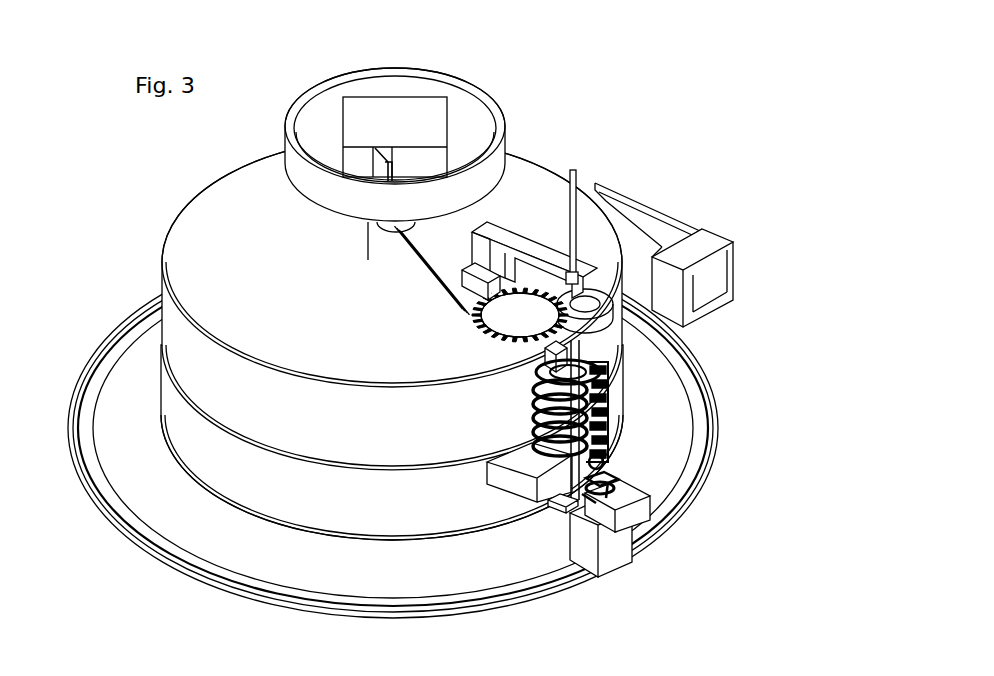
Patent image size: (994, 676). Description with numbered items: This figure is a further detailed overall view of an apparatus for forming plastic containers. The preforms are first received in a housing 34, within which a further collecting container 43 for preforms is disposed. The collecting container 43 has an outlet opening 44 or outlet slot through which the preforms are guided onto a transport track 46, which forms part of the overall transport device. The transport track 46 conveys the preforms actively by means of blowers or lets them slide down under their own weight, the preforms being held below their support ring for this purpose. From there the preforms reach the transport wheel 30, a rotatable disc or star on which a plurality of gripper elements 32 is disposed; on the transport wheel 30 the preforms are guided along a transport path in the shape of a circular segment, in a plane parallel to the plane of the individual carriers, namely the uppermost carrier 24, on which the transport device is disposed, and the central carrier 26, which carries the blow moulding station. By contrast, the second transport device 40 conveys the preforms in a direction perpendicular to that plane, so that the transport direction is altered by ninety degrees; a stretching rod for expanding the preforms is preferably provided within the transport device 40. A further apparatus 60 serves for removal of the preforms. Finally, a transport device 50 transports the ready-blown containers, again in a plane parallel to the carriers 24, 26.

The uppermost carrier 24 is at (218, 265).
The central carrier 26 is at (203, 383).
The transport wheel 30 is at (510, 313).
The gripper elements 32 is at (538, 344).
The housing 34 is at (500, 112).
The second transport device 40 is at (576, 212).
The collecting container 43 is at (404, 123).
The outlet opening 44 is at (392, 148).
The transport track 46 is at (425, 272).
The transport device 50 is at (650, 533).
The apparatus for removal of the preforms 60 is at (683, 260).